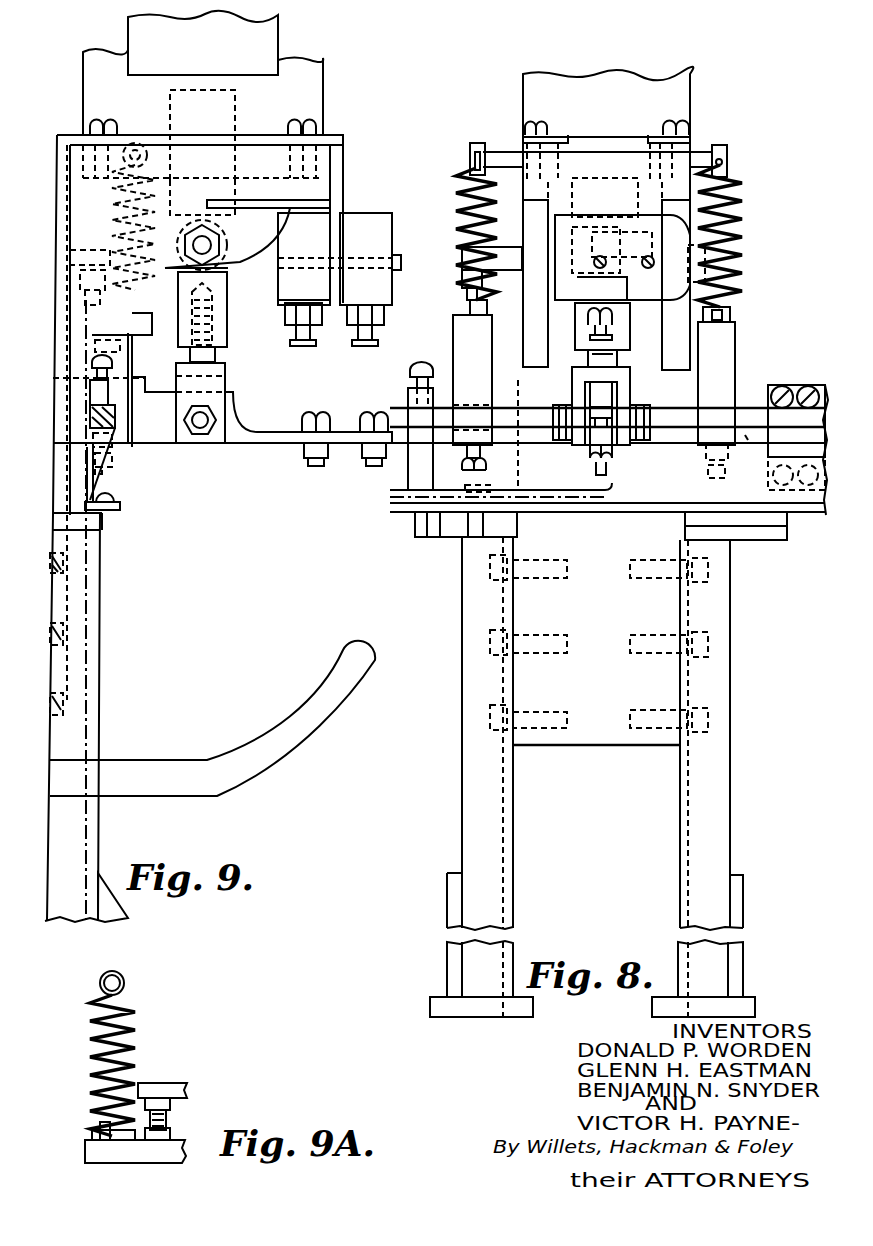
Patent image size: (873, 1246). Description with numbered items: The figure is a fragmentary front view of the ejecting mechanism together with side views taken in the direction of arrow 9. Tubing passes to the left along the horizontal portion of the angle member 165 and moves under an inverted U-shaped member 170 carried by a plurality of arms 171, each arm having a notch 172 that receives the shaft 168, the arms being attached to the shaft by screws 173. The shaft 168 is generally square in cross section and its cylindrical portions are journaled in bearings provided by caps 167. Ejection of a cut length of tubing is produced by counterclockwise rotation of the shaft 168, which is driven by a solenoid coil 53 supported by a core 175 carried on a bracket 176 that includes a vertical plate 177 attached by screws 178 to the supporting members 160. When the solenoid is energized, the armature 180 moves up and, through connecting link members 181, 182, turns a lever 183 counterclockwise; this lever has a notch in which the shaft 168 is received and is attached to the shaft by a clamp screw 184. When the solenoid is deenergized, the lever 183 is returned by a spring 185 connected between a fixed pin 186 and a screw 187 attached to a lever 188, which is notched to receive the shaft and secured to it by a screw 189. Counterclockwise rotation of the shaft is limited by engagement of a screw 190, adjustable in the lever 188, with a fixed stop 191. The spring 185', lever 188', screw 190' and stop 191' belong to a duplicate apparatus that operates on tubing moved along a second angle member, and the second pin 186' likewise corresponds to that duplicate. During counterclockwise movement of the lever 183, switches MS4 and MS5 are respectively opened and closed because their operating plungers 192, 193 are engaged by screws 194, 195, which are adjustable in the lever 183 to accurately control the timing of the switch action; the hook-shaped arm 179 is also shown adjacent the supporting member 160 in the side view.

In FIG. 9, the solenoid coil 53 is at (278, 28).
In FIG. 9, the core 175 is at (323, 78).
In FIG. 8, the core 175 is at (690, 95).
In FIG. 9, the bracket 176 is at (330, 147).
In FIG. 8, the bracket 176 is at (610, 150).
In FIG. 9, the armature 180 is at (235, 118).
In FIG. 9, the spring 185' is at (163, 216).
In FIG. 9, the fixed stop 191' is at (89, 226).
In FIG. 8, the fixed stop 191' is at (740, 263).
In FIG. 9, the screw 190' is at (91, 258).
In FIG. 9, the switch MS4 is at (278, 290).
In FIG. 9, the switch MS5 is at (395, 200).
In FIG. 8, the switch MS5 is at (612, 312).
In FIG. 9, the operating plunger 192 is at (303, 346).
In FIG. 9, the operating plunger 193 is at (365, 346).
In FIG. 8, the operating plunger 193 is at (617, 348).
In FIG. 9, the connecting link member 181 is at (227, 285).
In FIG. 8, the connecting link member 181 is at (575, 325).
In FIG. 9, the connecting link member 182 is at (225, 380).
In FIG. 8, the connecting link member 182 is at (572, 383).
In FIG. 9, the lever 183 is at (268, 440).
In FIG. 8, the lever 183 is at (610, 395).
In FIG. 9, the screw 194 is at (318, 415).
In FIG. 9, the screw 195 is at (378, 415).
In FIG. 8, the screw 195 is at (606, 410).
In FIG. 9, the lever 188' is at (137, 380).
In FIG. 9, the clamp screw 184 is at (118, 344).
In FIG. 9, the screw 173 is at (90, 365).
In FIG. 8, the screw 173 is at (420, 365).
In FIG. 9, the notch 172 is at (90, 400).
In FIG. 9, the shaft 168 is at (110, 470).
In FIG. 8, the shaft 168 is at (750, 445).
In FIG. 9, the screw 189 is at (90, 458).
In FIG. 8, the screw 189 is at (478, 465).
In FIG. 9, the inverted U-shaped member 170 is at (115, 498).
In FIG. 8, the inverted U-shaped member 170 is at (395, 503).
In FIG. 9, the arm 171 is at (113, 490).
In FIG. 8, the arm 171 is at (407, 480).
In FIG. 9, the supporting member 160 is at (100, 695).
In FIG. 8, the supporting member 160 is at (514, 830).
In FIG. 9, the vertical plate 177 is at (70, 590).
In FIG. 8, the vertical plate 177 is at (605, 748).
In FIG. 9, the screw 178 is at (60, 640).
In FIG. 8, the screw 178 is at (708, 647).
In FIG. 9, the hook arm 179 is at (210, 765).
In FIG. 8, the fixed pin 186 is at (481, 143).
In FIG. 9A, the fixed pin 186 is at (137, 980).
In FIG. 8, the spring hook pin 186' is at (726, 144).
In FIG. 8, the spring 185 is at (602, 236).
In FIG. 9A, the spring 185 is at (136, 1065).
In FIG. 8, the fixed stop 191 is at (471, 258).
In FIG. 9A, the fixed stop 191 is at (171, 1078).
In FIG. 8, the screw 190 is at (453, 292).
In FIG. 9A, the screw 190 is at (183, 1119).
In FIG. 8, the lever 188 is at (601, 399).
In FIG. 9A, the lever 188 is at (113, 1151).
In FIG. 8, the cap 167 is at (790, 388).
In FIG. 8, the angle member 165 is at (812, 520).
In FIG. 8, the arrow 9 is at (430, 596).
In FIG. 9A, the screw 187 is at (95, 1128).